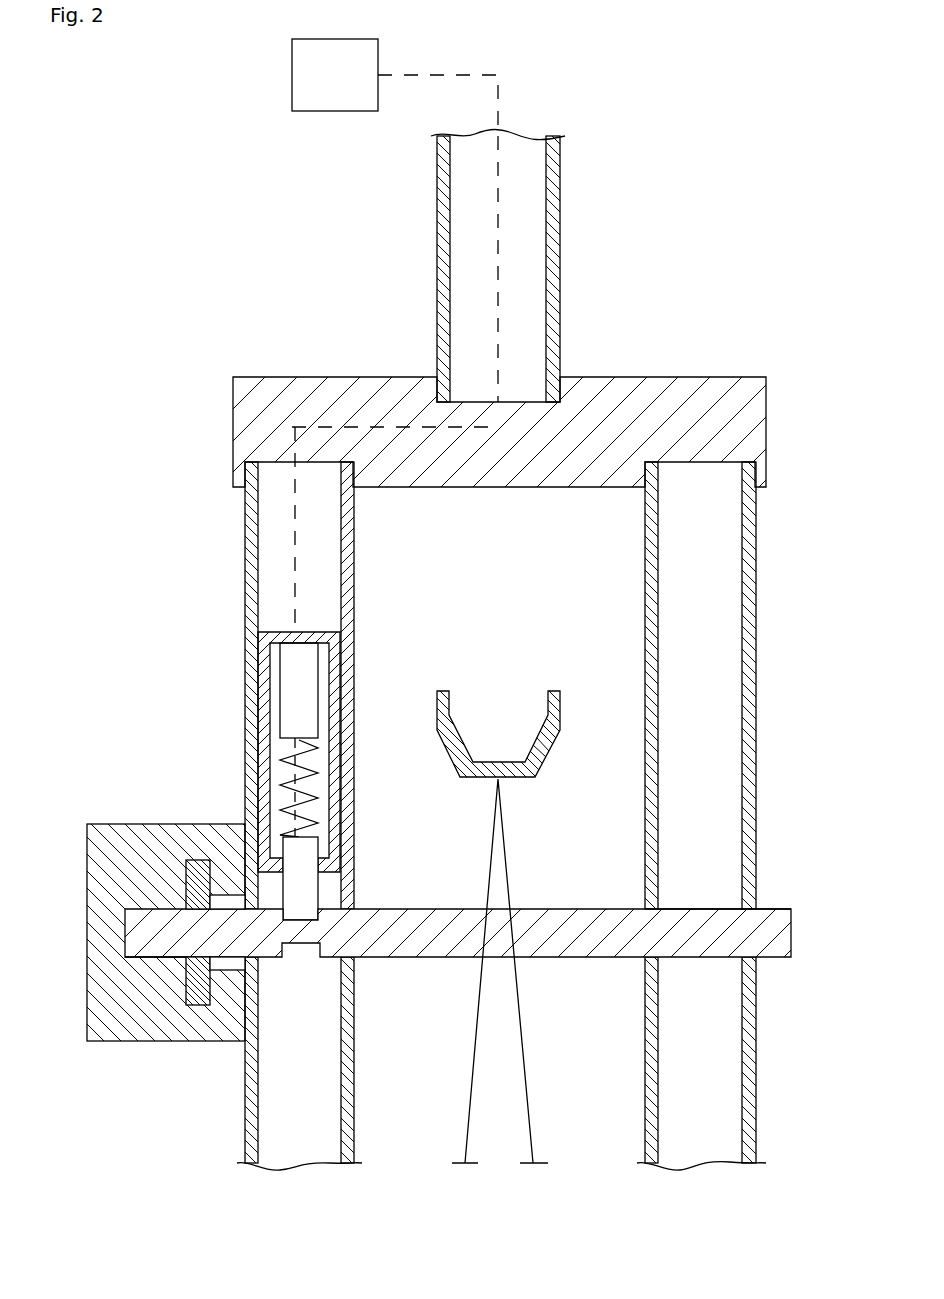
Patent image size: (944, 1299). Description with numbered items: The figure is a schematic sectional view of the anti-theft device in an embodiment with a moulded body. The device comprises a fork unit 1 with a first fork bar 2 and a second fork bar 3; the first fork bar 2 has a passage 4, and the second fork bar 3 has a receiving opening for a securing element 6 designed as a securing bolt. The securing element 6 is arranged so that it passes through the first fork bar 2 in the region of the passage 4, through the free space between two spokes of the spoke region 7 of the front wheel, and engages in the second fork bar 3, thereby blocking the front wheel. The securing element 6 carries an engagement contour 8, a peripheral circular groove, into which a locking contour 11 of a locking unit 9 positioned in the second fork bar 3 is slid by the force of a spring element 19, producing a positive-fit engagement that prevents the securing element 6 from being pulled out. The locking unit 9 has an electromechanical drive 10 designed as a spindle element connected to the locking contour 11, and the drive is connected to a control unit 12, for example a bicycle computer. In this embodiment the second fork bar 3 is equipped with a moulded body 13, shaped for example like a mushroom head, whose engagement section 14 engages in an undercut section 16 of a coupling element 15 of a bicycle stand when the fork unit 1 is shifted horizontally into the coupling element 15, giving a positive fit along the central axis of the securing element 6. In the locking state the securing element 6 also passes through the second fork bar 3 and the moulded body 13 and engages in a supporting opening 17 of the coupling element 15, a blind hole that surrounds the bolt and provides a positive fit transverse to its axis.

The fork unit 1 is at (613, 368).
The first fork bar 2 is at (702, 578).
The second fork bar 3 is at (242, 558).
The passage 4 is at (753, 909).
The securing element 6 is at (762, 940).
The spoke region 7 is at (507, 1042).
The engagement contour 8 is at (300, 950).
The locking unit 9 is at (257, 680).
The electromechanical drive 10 is at (287, 716).
The locking contour 11 is at (300, 852).
The control unit 12 is at (325, 55).
The moulded body 13 is at (186, 873).
The engagement section 14 is at (223, 980).
The coupling element 15 is at (100, 997).
The undercut section 16 is at (220, 978).
The supporting opening 17 is at (130, 957).
The spring element 19 is at (283, 767).